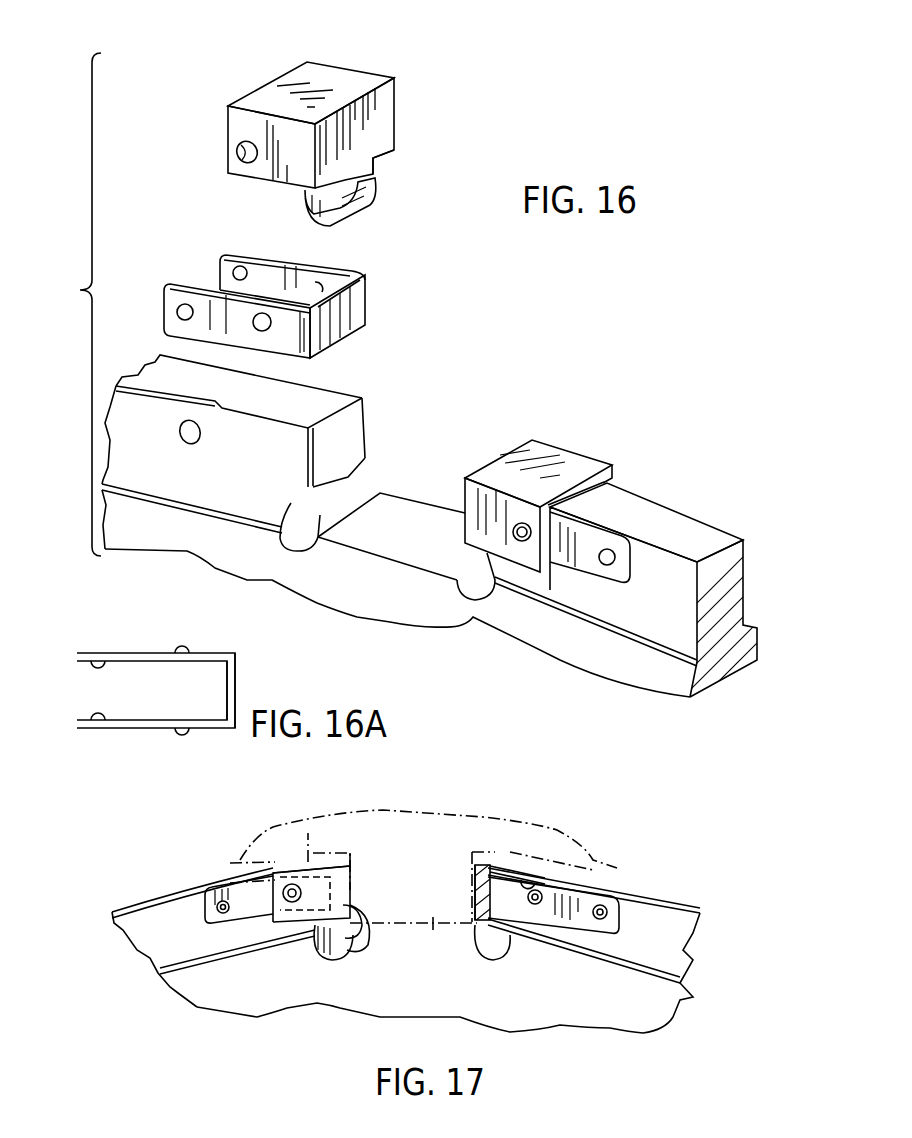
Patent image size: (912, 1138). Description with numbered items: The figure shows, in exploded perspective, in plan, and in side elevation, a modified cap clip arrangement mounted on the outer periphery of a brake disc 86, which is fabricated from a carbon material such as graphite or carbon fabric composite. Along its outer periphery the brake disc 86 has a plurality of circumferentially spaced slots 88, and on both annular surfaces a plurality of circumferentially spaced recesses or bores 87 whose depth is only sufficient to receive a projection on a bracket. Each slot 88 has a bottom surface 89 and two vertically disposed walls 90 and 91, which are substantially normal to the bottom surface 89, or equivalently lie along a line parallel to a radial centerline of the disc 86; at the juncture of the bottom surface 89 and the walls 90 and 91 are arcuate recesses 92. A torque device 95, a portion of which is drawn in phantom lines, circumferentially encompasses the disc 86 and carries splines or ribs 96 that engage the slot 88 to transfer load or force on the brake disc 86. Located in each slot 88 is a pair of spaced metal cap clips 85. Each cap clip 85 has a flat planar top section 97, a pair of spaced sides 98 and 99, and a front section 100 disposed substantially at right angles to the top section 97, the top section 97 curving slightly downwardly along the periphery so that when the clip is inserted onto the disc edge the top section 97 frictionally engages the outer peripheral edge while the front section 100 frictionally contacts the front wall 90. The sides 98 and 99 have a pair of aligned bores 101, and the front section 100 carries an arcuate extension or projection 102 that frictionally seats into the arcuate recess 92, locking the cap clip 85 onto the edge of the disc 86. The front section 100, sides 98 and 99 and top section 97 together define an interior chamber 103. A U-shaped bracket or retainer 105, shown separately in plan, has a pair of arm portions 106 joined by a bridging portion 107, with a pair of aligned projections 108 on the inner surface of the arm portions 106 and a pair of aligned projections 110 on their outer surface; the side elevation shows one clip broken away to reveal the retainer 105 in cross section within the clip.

In FIG. 16, the cap clip 85 is at (385, 328).
In FIG. 17, the cap clip 85 is at (430, 912).
In FIG. 16, the brake disc 86 is at (431, 439).
In FIG. 17, the brake disc 86 is at (406, 966).
In FIG. 16, the bores 87 is at (186, 443).
In FIG. 16, the slots 88 is at (431, 439).
In FIG. 17, the slots 88 is at (421, 921).
In FIG. 16, the bottom surface 89 is at (420, 510).
In FIG. 17, the bottom surface 89 is at (420, 940).
In FIG. 16, the wall 90 is at (265, 421).
In FIG. 17, the wall 90 is at (352, 893).
In FIG. 17, the wall 91 is at (470, 880).
In FIG. 16, the arcuate recesses 92 is at (297, 560).
In FIG. 17, the arcuate recesses 92 is at (328, 958).
In FIG. 17, the torque device 95 is at (545, 835).
In FIG. 17, the splines or ribs 96 is at (402, 950).
In FIG. 16, the top section 97 is at (322, 78).
In FIG. 17, the top section 97 is at (312, 866).
In FIG. 16, the side 98 is at (612, 474).
In FIG. 17, the side 98 is at (293, 918).
In FIG. 16, the side 99 is at (365, 70).
In FIG. 16, the front section 100 is at (385, 127).
In FIG. 17, the front section 100 is at (340, 946).
In FIG. 16, the aligned bores 101 is at (238, 158).
In FIG. 16, the arcuate extension or projection 102 is at (355, 197).
In FIG. 17, the arcuate extension or projection 102 is at (333, 952).
In FIG. 17, the interior chamber 103 is at (540, 875).
In FIG. 16, the U-shaped bracket or retainer 105 is at (392, 435).
In FIG. 16A, the U-shaped bracket or retainer 105 is at (165, 706).
In FIG. 17, the U-shaped bracket or retainer 105 is at (433, 911).
In FIG. 16, the arm portions 106 is at (263, 268).
In FIG. 16A, the arm portions 106 is at (122, 653).
In FIG. 17, the arm portions 106 is at (242, 915).
In FIG. 16, the bridging portion 107 is at (345, 325).
In FIG. 16A, the bridging portion 107 is at (236, 691).
In FIG. 17, the bridging portion 107 is at (476, 898).
In FIG. 16, the aligned projections 108 is at (237, 270).
In FIG. 16A, the aligned projections 108 is at (97, 720).
In FIG. 17, the aligned projections 108 is at (220, 904).
In FIG. 16, the aligned projections 110 is at (265, 330).
In FIG. 16A, the aligned projections 110 is at (186, 651).
In FIG. 17, the aligned projections 110 is at (289, 884).